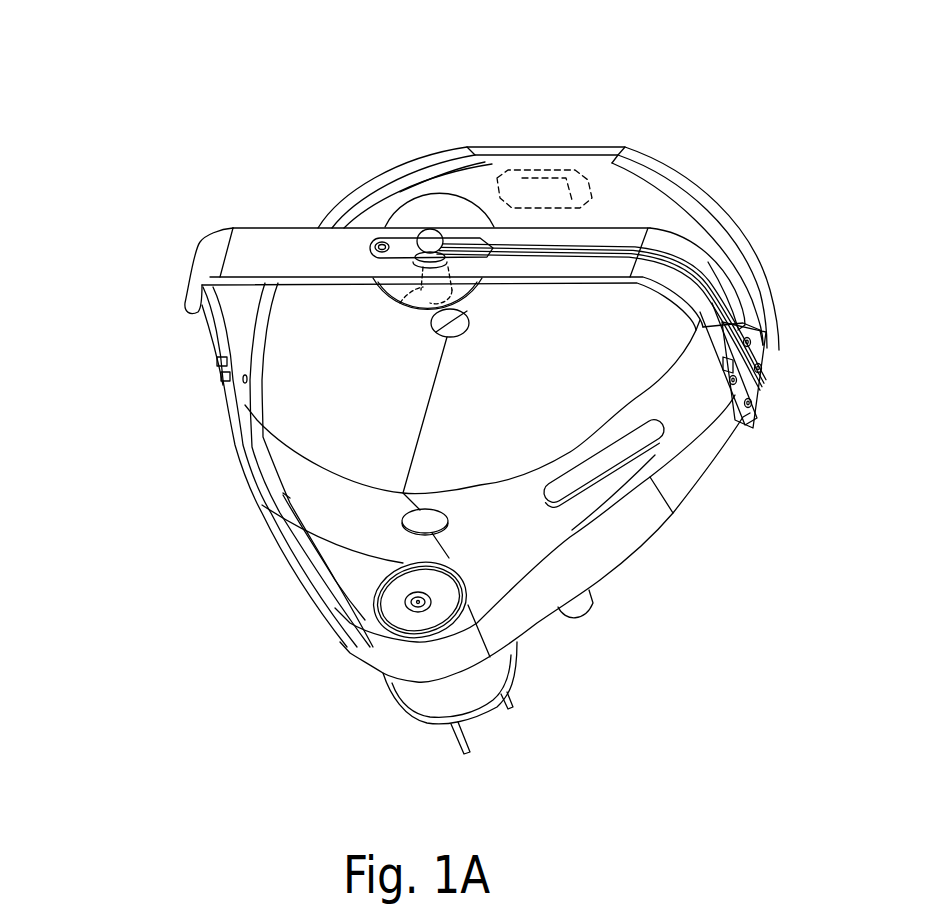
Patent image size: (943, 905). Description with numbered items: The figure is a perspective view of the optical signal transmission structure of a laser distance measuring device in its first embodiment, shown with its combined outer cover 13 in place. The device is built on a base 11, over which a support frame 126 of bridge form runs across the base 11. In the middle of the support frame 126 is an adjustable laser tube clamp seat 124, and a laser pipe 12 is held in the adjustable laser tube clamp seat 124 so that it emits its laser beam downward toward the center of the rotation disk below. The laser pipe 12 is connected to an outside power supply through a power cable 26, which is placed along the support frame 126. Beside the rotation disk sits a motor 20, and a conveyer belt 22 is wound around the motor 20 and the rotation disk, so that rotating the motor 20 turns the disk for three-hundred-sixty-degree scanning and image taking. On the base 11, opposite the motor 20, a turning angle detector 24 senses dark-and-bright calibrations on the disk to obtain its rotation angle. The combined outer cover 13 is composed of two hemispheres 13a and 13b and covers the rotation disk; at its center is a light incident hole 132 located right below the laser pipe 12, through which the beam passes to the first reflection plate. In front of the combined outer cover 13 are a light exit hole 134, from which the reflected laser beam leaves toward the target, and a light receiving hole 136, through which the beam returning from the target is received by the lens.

The base 11 is at (513, 627).
The laser pipe 12 is at (398, 300).
The combined outer cover 13 is at (252, 405).
The hemisphere 13a is at (433, 185).
The hemisphere 13b is at (633, 193).
The motor 20 is at (403, 697).
The conveyer belt 22 is at (331, 562).
The turning angle detector 24 is at (534, 172).
The power cable 26 is at (677, 256).
The adjustable laser tube clamp seat 124 is at (422, 233).
The support frame 126 is at (212, 243).
The light incident hole 132 is at (428, 340).
The light exit hole 134 is at (613, 457).
The light receiving hole 136 is at (405, 505).